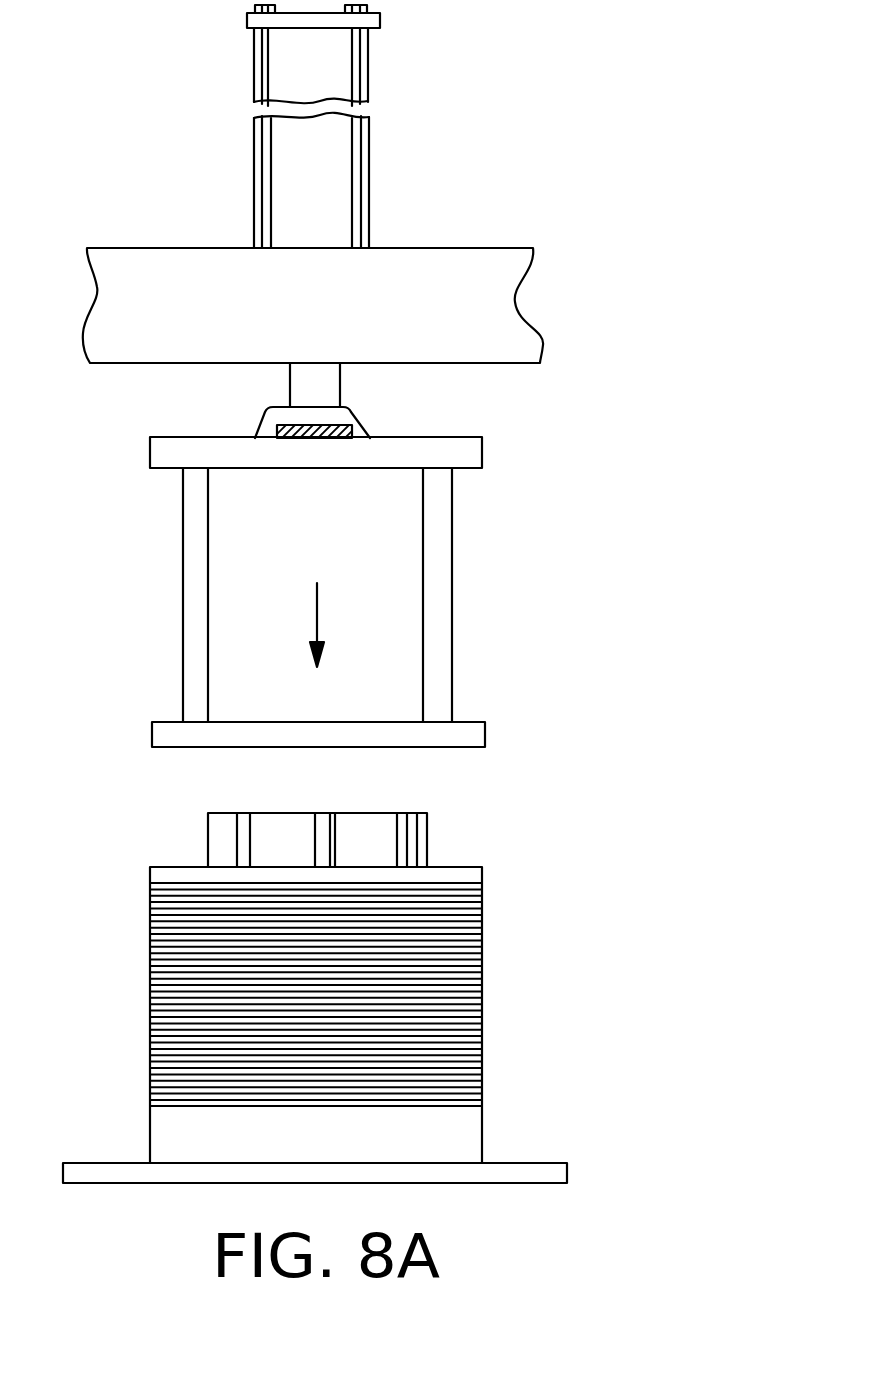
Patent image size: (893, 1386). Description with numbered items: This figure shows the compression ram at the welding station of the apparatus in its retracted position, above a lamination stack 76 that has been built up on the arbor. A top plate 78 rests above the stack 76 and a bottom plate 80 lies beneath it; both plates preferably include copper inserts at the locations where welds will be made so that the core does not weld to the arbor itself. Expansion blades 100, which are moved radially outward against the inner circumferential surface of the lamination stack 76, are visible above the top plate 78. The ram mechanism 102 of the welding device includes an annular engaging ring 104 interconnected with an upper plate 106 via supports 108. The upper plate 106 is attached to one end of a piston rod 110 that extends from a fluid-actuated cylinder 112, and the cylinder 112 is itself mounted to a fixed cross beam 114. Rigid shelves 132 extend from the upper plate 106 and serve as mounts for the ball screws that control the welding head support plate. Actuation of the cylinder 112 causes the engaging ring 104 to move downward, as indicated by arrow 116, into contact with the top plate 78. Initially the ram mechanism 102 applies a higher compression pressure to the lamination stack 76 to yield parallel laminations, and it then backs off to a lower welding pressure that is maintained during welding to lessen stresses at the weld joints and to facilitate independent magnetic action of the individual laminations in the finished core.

The lamination stack 76 is at (467, 998).
The top plate 78 is at (473, 877).
The bottom plate 80 is at (470, 1133).
The expansion blades 100 is at (243, 838).
The ram mechanism 102 is at (342, 587).
The annular engaging ring 104 is at (470, 733).
The upper plate 106 is at (463, 455).
The supports 108 is at (440, 510).
The piston rod 110 is at (317, 388).
The fluid-actuated cylinder 112 is at (313, 192).
The fixed cross beam 114 is at (158, 248).
The arrow 116 is at (313, 612).
The rigid shelves 132 is at (337, 425).